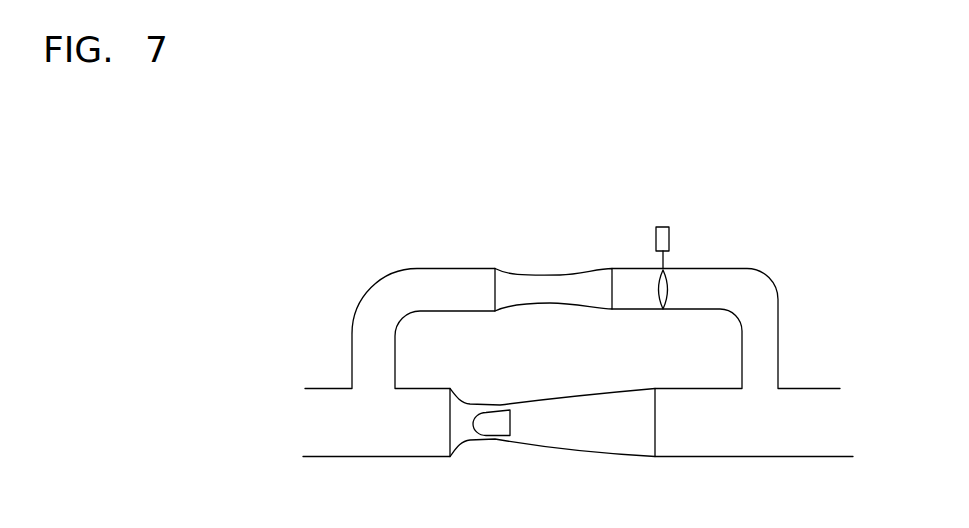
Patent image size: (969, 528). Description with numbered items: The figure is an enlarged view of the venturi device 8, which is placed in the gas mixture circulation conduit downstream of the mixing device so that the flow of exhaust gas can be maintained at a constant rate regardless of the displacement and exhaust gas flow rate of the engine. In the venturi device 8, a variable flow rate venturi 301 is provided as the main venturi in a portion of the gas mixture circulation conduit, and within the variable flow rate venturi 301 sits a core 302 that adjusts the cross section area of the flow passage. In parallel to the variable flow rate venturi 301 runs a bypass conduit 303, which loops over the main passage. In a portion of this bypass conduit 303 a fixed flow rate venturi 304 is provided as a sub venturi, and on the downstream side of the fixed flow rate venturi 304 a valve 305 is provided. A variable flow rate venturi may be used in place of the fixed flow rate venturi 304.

The venturi device 8 is at (473, 240).
The variable flow rate venturi 301 is at (530, 427).
The core 302 is at (488, 422).
The bypass conduit 303 is at (372, 288).
The fixed flow rate venturi 304 is at (515, 287).
The valve 305 is at (662, 242).